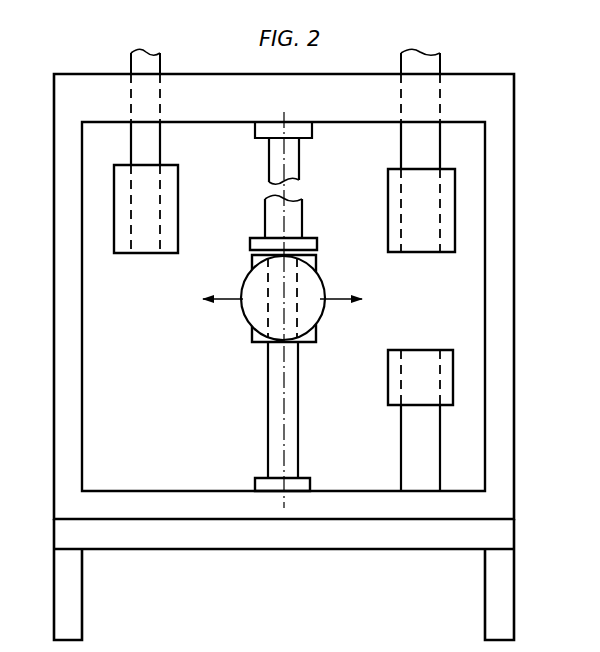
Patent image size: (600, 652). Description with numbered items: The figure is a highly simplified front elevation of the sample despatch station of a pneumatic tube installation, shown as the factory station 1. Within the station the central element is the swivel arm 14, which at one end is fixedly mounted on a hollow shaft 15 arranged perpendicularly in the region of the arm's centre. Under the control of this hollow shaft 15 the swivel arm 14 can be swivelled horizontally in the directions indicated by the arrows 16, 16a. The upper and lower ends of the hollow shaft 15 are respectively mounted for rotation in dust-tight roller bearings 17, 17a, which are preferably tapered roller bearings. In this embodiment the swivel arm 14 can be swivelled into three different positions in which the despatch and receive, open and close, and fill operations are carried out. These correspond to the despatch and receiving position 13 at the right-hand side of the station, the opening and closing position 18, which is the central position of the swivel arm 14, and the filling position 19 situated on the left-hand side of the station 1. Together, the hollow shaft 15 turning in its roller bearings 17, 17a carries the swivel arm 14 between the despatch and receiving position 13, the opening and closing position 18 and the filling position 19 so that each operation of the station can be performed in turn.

The factory station 1 is at (516, 489).
The despatch and receiving position 13 is at (450, 281).
The swivel arm 14 is at (247, 342).
The hollow shaft 15 is at (272, 412).
The arrow 16 is at (212, 297).
The arrow 16a is at (344, 297).
The roller bearing 17 is at (311, 134).
The roller bearing 17a is at (309, 486).
The opening and closing position 18 is at (308, 234).
The filling position 19 is at (122, 258).